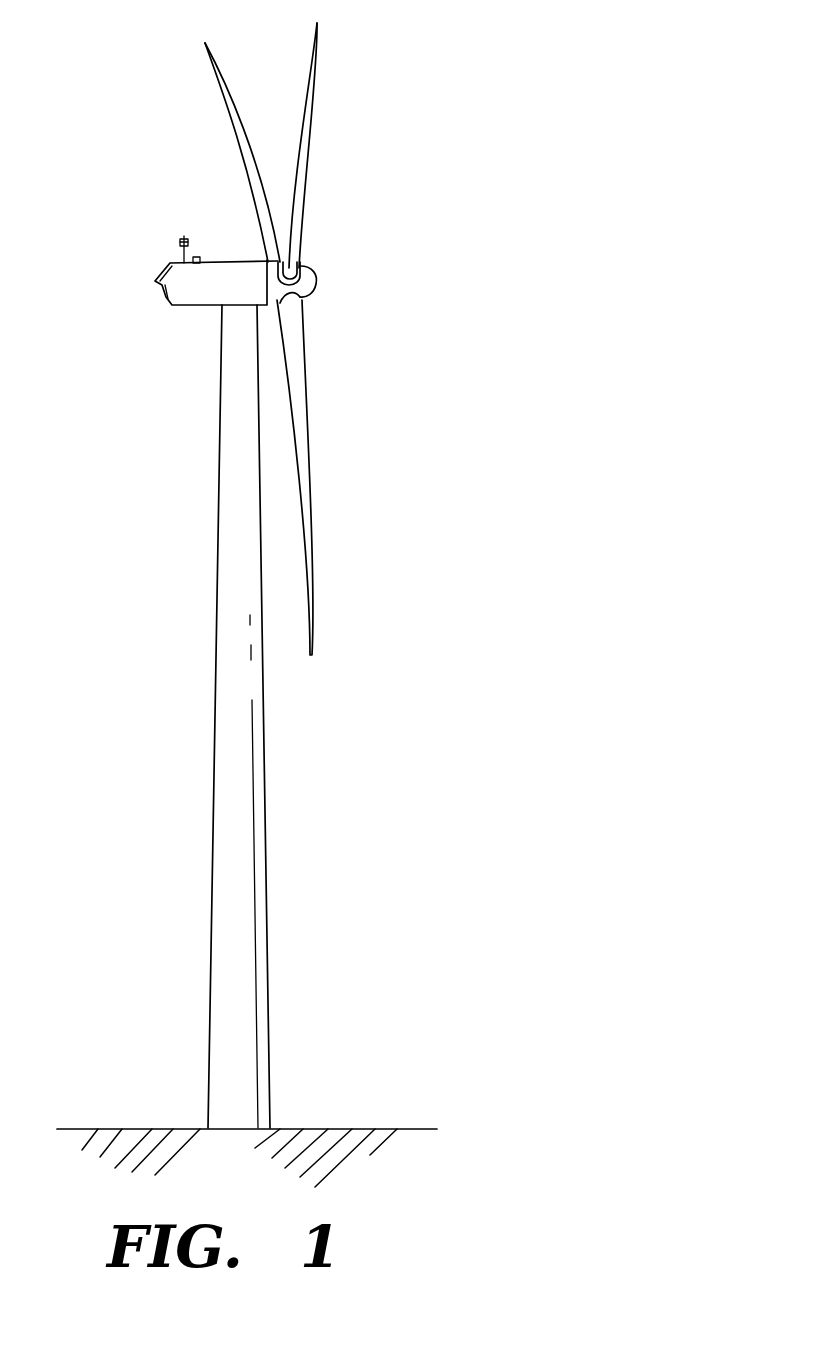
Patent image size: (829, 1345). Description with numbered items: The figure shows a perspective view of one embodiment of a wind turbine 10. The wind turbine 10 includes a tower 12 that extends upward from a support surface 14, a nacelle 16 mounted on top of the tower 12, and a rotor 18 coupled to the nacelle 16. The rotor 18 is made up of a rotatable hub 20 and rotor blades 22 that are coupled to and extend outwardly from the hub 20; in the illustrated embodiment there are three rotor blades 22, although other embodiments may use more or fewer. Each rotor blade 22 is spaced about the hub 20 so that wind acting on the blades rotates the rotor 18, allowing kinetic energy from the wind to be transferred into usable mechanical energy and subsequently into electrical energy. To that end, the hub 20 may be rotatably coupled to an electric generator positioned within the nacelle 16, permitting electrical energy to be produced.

The wind turbine 10 is at (436, 98).
The tower 12 is at (228, 829).
The support surface 14 is at (138, 1129).
The nacelle 16 is at (197, 307).
The rotor 18 is at (318, 299).
The rotatable hub 20 is at (316, 283).
The rotor blade 22 is at (242, 151).